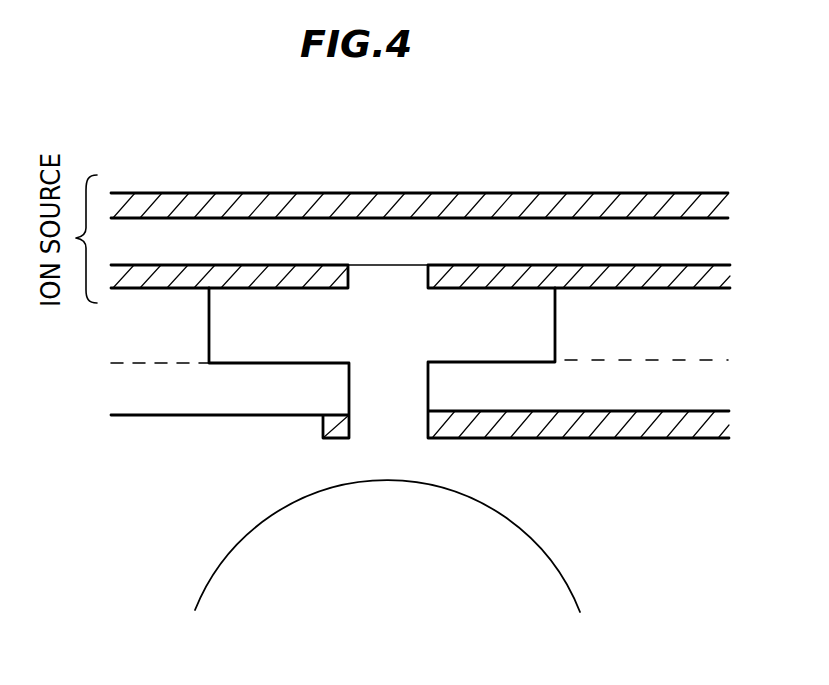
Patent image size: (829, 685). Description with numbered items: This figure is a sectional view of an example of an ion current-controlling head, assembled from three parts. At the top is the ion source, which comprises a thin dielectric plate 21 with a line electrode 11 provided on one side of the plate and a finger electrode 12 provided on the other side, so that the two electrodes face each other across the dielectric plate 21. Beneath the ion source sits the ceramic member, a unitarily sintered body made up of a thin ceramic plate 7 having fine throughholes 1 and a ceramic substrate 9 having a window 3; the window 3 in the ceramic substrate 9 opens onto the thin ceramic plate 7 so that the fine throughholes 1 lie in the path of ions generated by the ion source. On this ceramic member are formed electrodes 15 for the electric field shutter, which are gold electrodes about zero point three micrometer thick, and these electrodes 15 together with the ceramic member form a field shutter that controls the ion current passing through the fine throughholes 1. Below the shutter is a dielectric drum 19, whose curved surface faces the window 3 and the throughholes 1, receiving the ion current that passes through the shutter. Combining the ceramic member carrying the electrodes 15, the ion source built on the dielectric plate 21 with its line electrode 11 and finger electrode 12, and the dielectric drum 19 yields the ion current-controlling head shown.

The line electrode 11 is at (528, 205).
The thin dielectric plate 21 is at (708, 233).
The finger electrode 12 is at (705, 277).
The ceramic substrate 9 is at (685, 327).
The thin ceramic plate 7 is at (182, 392).
The window 3 is at (430, 320).
The electrodes for the electric field shutter 15 is at (603, 437).
The fine throughholes 1 is at (397, 402).
The dielectric drum 19 is at (553, 560).